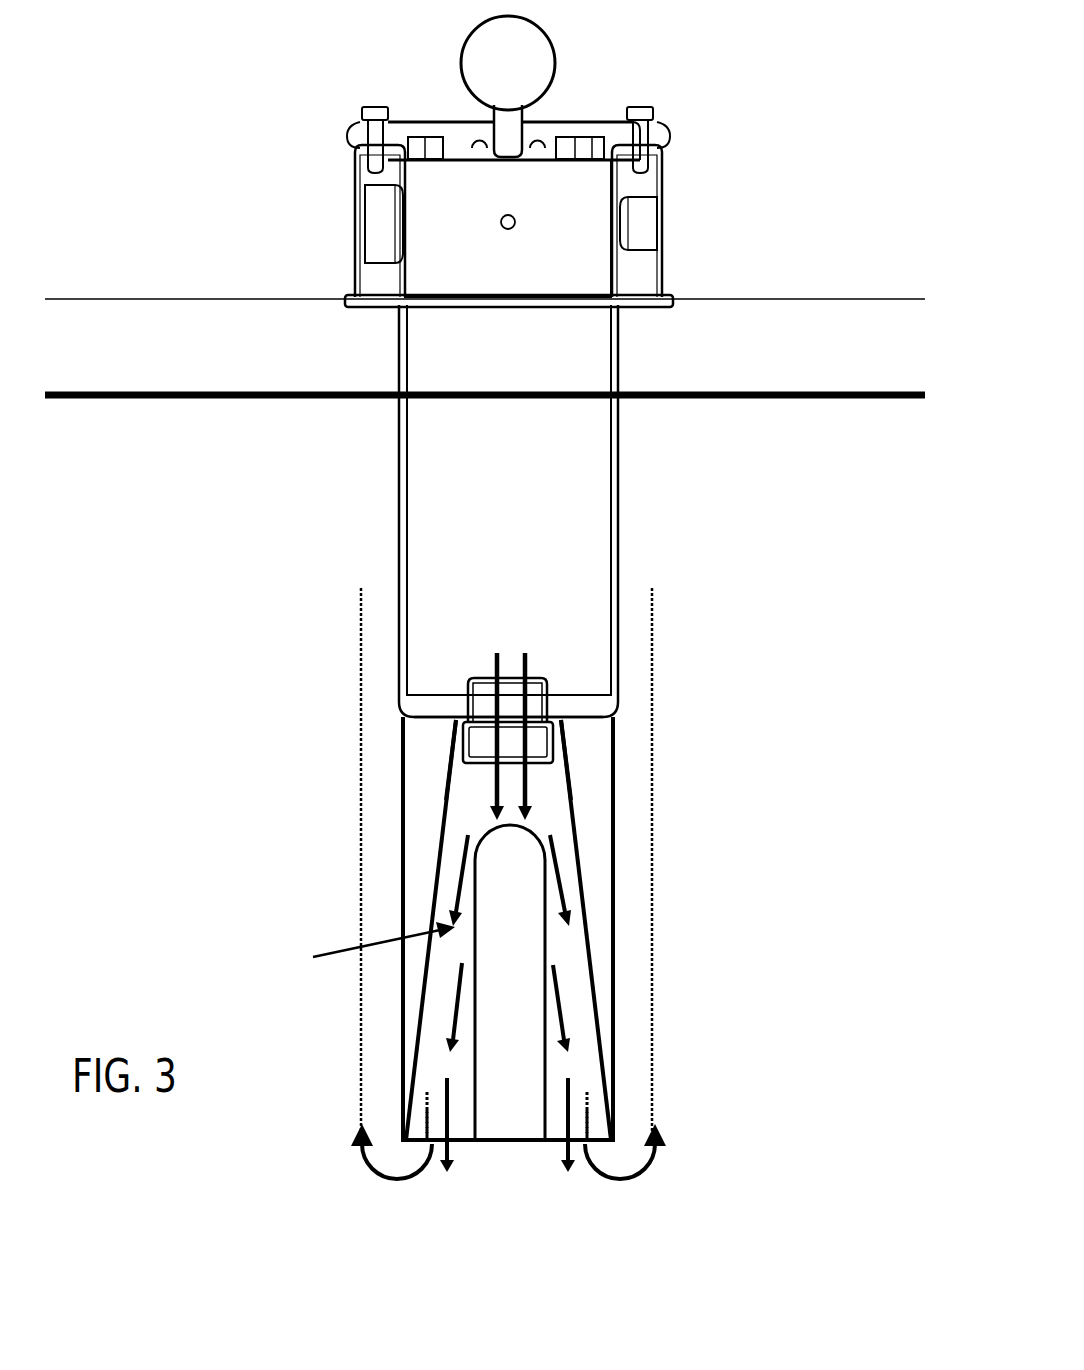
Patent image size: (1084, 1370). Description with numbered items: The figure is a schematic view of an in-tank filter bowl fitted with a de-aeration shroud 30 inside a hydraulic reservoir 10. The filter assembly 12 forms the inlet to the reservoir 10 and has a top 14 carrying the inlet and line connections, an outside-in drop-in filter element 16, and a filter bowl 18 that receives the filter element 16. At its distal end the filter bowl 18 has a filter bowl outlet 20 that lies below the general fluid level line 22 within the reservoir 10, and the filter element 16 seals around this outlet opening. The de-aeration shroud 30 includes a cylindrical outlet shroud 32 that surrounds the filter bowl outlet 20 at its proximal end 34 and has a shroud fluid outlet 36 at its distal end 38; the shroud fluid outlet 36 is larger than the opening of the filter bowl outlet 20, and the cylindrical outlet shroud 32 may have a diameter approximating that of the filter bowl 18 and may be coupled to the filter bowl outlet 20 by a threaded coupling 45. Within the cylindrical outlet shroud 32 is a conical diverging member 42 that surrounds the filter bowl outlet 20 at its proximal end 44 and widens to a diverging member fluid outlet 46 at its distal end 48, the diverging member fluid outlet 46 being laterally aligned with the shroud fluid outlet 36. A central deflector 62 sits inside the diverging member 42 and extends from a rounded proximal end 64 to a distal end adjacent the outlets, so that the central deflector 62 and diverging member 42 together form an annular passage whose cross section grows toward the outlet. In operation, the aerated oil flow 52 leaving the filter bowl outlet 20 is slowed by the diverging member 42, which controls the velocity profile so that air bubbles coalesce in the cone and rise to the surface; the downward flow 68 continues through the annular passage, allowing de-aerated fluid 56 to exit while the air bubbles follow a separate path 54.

The reservoir 10 is at (805, 298).
The filter assembly 12 is at (577, 161).
The top 14 is at (469, 257).
The filter element 16 is at (545, 511).
The filter bowl 18 is at (620, 365).
The filter bowl outlet 20 is at (550, 692).
The fluid level line 22 is at (768, 390).
The de-aeration shroud 30 is at (514, 886).
The cylindrical outlet shroud 32 is at (615, 907).
The proximal end 34 is at (620, 714).
The shroud fluid outlet 36 is at (560, 1145).
The distal end 38 is at (615, 1140).
The diverging member 42 is at (578, 838).
The proximal end 44 is at (452, 767).
The threaded coupling 45 is at (565, 745).
The diverging member fluid outlet 46 is at (433, 1143).
The distal end 48 is at (400, 1140).
The aerated oil flow 52 is at (492, 670).
The separate path 54 is at (630, 1170).
The de-aerated fluid 56 is at (450, 1150).
The central deflector 62 is at (543, 1037).
The rounded proximal end 64 is at (508, 828).
The downward oil flow 68 is at (537, 1133).